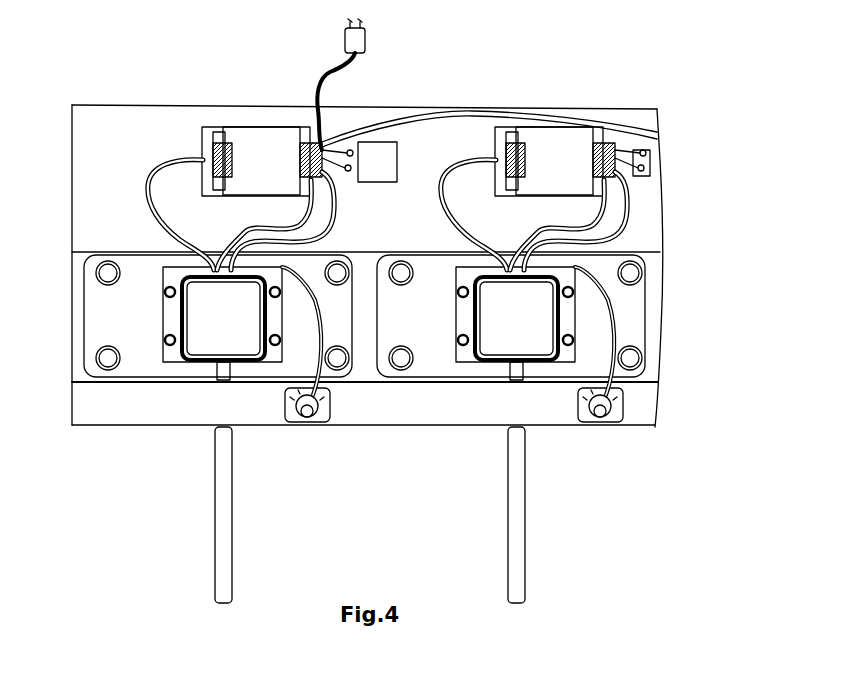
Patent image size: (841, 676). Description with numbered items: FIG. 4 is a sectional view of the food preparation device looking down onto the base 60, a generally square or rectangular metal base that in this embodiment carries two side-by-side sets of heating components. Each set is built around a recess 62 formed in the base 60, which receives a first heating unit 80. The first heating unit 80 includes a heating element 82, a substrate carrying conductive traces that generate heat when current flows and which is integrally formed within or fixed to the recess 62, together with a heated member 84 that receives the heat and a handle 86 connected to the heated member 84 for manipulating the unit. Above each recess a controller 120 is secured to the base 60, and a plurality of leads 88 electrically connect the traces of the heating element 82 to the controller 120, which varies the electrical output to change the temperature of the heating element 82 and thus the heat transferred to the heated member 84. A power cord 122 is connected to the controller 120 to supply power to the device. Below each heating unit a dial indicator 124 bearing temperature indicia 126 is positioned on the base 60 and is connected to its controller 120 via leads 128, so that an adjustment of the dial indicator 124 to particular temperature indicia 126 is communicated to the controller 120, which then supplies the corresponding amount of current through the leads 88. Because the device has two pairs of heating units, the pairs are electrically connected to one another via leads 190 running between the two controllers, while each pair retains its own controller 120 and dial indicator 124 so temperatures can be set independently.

The base 60 is at (97, 158).
The recess 62 is at (205, 328).
The first heating unit 80 is at (193, 366).
The heating element 82 is at (223, 347).
The heated member 84 is at (238, 342).
The handle 86 is at (223, 585).
The leads 88 is at (242, 223).
The controller 120 is at (258, 165).
The power cord 122 is at (362, 42).
The dial indicator 124 is at (314, 434).
The temperature indicia 126 is at (330, 410).
The leads 128 is at (148, 210).
The leads 190 is at (447, 120).